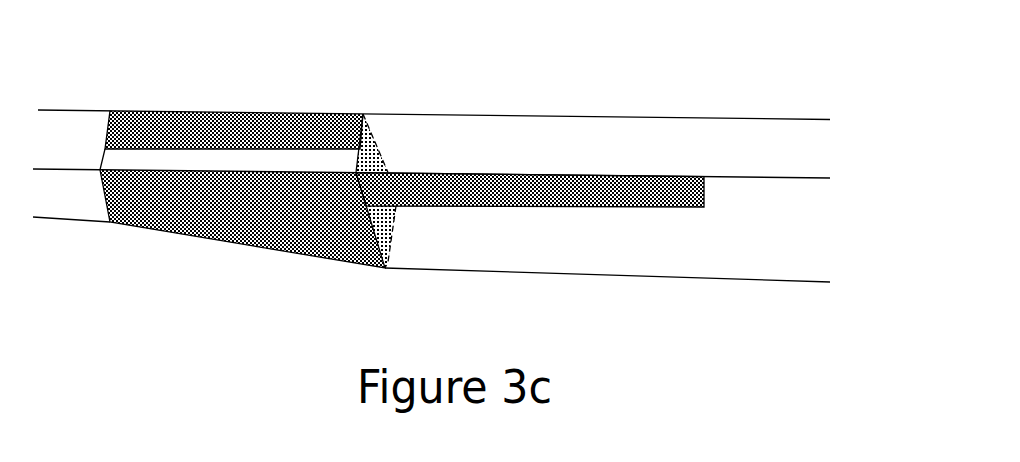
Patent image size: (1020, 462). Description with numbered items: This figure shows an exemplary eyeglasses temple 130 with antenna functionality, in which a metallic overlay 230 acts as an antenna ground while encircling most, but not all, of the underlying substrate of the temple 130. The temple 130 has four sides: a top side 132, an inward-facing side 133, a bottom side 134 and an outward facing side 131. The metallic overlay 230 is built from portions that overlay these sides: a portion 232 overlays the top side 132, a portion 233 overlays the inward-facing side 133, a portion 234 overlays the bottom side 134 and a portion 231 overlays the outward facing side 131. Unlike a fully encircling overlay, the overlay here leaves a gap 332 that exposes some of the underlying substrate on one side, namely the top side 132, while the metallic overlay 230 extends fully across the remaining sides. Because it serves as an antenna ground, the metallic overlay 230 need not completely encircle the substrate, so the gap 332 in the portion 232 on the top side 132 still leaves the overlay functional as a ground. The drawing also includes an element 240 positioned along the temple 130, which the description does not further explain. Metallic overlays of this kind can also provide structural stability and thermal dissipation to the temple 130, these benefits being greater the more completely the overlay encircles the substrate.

The temple 130 is at (431, 194).
The outward facing side 131 is at (530, 110).
The top side 132 is at (783, 158).
The inward-facing side 133 is at (751, 250).
The bottom side 134 is at (582, 284).
The metallic overlay 230 is at (248, 208).
The metallic overlay portion 231 is at (368, 162).
The metallic overlay portion 232 is at (162, 141).
The metallic overlay portion 233 is at (288, 219).
The metallic overlay portion 234 is at (382, 223).
The tab 240 is at (478, 204).
The gap 332 is at (203, 165).